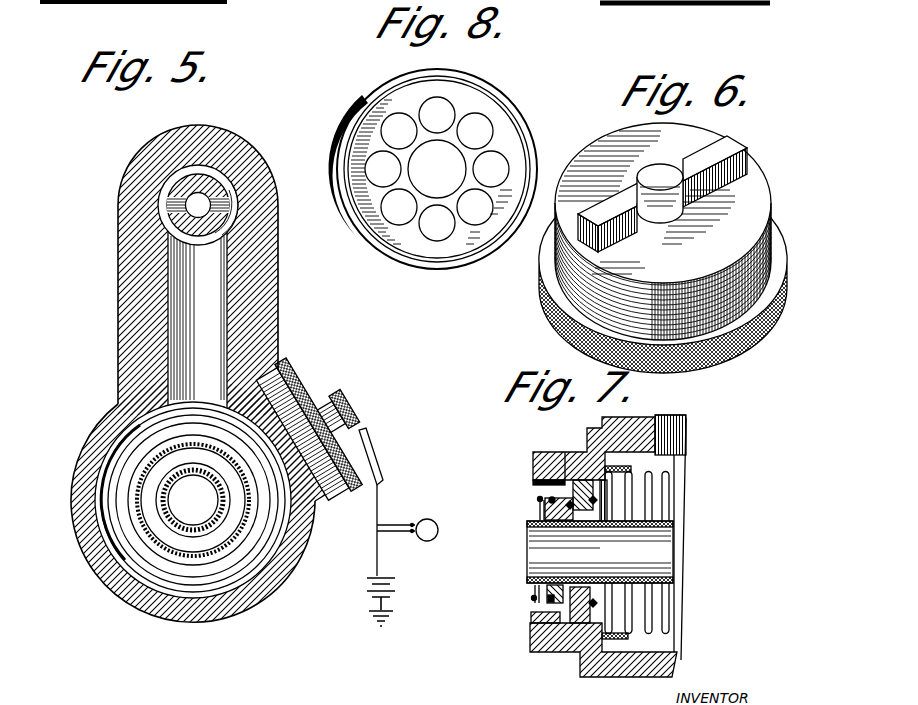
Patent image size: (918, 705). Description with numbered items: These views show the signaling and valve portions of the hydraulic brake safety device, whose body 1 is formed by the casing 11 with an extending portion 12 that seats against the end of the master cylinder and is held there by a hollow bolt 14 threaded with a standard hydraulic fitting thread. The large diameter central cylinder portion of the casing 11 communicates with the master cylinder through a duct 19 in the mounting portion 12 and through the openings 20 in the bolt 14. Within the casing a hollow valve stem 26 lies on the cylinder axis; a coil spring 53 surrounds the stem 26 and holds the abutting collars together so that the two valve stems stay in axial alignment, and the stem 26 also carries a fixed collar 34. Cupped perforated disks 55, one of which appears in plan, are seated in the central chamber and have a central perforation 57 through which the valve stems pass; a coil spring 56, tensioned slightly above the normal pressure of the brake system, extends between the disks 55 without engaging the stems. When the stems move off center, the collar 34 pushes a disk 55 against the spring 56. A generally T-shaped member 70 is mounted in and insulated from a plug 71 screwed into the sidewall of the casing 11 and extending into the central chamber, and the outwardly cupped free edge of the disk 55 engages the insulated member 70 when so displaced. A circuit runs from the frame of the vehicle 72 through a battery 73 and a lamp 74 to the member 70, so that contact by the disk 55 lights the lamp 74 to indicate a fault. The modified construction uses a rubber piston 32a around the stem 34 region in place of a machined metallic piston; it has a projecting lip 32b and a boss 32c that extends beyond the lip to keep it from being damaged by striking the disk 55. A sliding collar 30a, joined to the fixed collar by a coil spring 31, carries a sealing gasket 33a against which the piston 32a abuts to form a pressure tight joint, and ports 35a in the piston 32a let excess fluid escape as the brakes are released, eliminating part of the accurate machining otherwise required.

In FIG. 5, the body 1 is at (207, 613).
In FIG. 5, the extending portion 12 is at (278, 285).
In FIG. 5, the hollow bolt 14 is at (183, 188).
In FIG. 5, the duct 19 is at (190, 325).
In FIG. 5, the openings 20 is at (183, 208).
In FIG. 5, the hollow valve stem 26 is at (210, 513).
In FIG. 5, the coil spring 53 is at (163, 527).
In FIG. 5, the cupped perforated disk 55 is at (237, 577).
In FIG. 8, the cupped perforated disk 55 is at (473, 100).
In FIG. 7, the cupped perforated disk 55 is at (605, 467).
In FIG. 5, the coil spring 56 is at (120, 477).
In FIG. 7, the coil spring 56 is at (667, 607).
In FIG. 8, the central perforation 57 is at (410, 182).
In FIG. 5, the T-shaped member 70 is at (358, 402).
In FIG. 6, the T-shaped member 70 is at (727, 142).
In FIG. 5, the plug 71 is at (298, 374).
In FIG. 6, the plug 71 is at (543, 276).
In FIG. 5, the frame of the vehicle 72 is at (385, 622).
In FIG. 5, the battery 73 is at (393, 586).
In FIG. 5, the lamp 74 is at (428, 518).
In FIG. 7, the casing 11 is at (587, 457).
In FIG. 7, the sliding collar 30a is at (538, 507).
In FIG. 7, the coil spring 31 is at (550, 601).
In FIG. 7, the piston 32a is at (562, 647).
In FIG. 7, the projecting lip 32b is at (600, 502).
In FIG. 7, the boss 32c is at (593, 504).
In FIG. 7, the sealing gasket 33a is at (563, 603).
In FIG. 7, the fixed collar 34 is at (593, 547).
In FIG. 7, the ports 35a is at (562, 610).